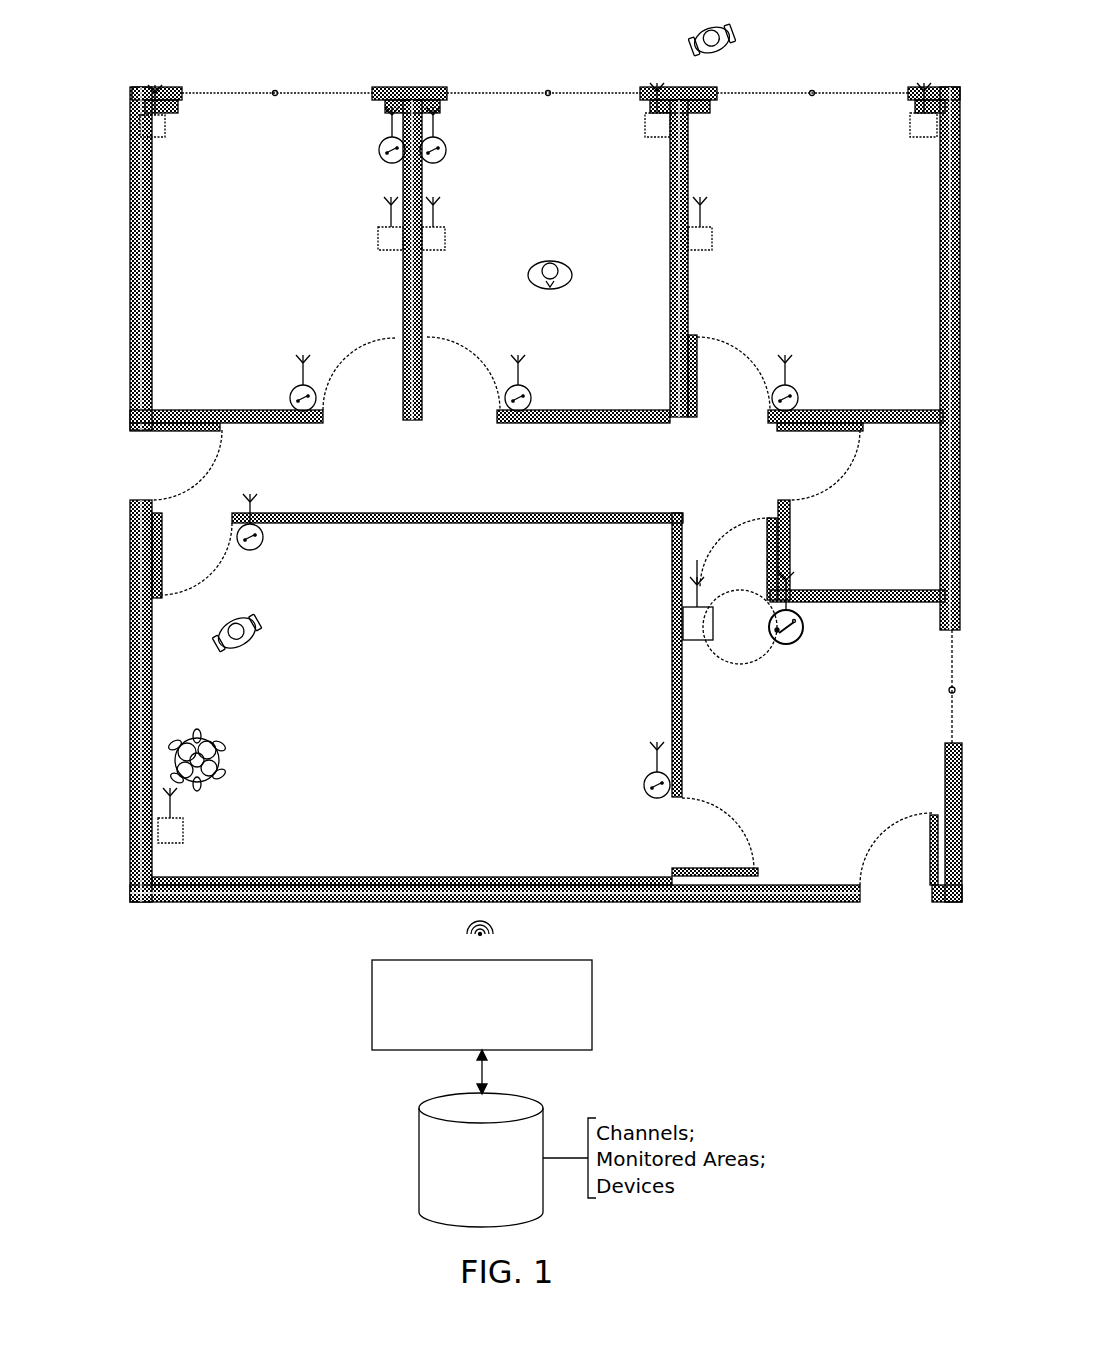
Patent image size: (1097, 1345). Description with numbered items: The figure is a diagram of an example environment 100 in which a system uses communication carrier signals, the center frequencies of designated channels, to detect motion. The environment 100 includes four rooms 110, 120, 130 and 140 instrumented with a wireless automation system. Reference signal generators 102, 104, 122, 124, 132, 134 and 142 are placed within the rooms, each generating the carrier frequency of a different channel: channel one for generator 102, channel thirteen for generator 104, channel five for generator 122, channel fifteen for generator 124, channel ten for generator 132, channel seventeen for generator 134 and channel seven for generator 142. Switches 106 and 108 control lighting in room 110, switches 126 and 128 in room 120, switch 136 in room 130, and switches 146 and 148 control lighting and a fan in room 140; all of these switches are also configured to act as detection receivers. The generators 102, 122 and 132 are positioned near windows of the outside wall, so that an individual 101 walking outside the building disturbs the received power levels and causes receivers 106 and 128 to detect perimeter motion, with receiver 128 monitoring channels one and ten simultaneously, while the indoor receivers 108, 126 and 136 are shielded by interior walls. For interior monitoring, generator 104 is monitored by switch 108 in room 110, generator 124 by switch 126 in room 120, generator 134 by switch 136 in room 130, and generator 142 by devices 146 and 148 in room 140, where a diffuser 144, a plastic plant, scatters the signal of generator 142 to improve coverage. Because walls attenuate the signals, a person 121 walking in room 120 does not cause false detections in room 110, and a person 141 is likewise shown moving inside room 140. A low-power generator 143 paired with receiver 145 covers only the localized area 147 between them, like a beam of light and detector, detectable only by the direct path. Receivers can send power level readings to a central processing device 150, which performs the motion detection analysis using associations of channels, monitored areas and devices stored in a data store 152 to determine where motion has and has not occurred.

The environment 100 is at (101, 110).
The individual 101 is at (728, 32).
The reference signal generator 102 is at (145, 133).
The reference signal generator 104 is at (378, 246).
The switch 106 is at (380, 150).
The switch 108 is at (295, 391).
The room 110 is at (226, 393).
The room 120 is at (583, 380).
The person 121 is at (573, 286).
The reference signal generator 122 is at (645, 118).
The reference signal generator 124 is at (445, 241).
The switch 126 is at (508, 388).
The switch 128 is at (447, 158).
The room 130 is at (855, 387).
The reference signal generator 132 is at (910, 125).
The reference signal generator 134 is at (712, 236).
The switch 136 is at (792, 388).
The room 140 is at (417, 699).
The person in fourth room 141 is at (262, 634).
The reference signal generator 142 is at (183, 828).
The signal generator 143 is at (683, 622).
The diffuser 144 is at (228, 776).
The receiver 145 is at (800, 616).
The switch 146 is at (646, 753).
The area 147 is at (760, 664).
The switch 148 is at (265, 546).
The central processing device 150 is at (482, 1005).
The data store 152 is at (481, 1160).